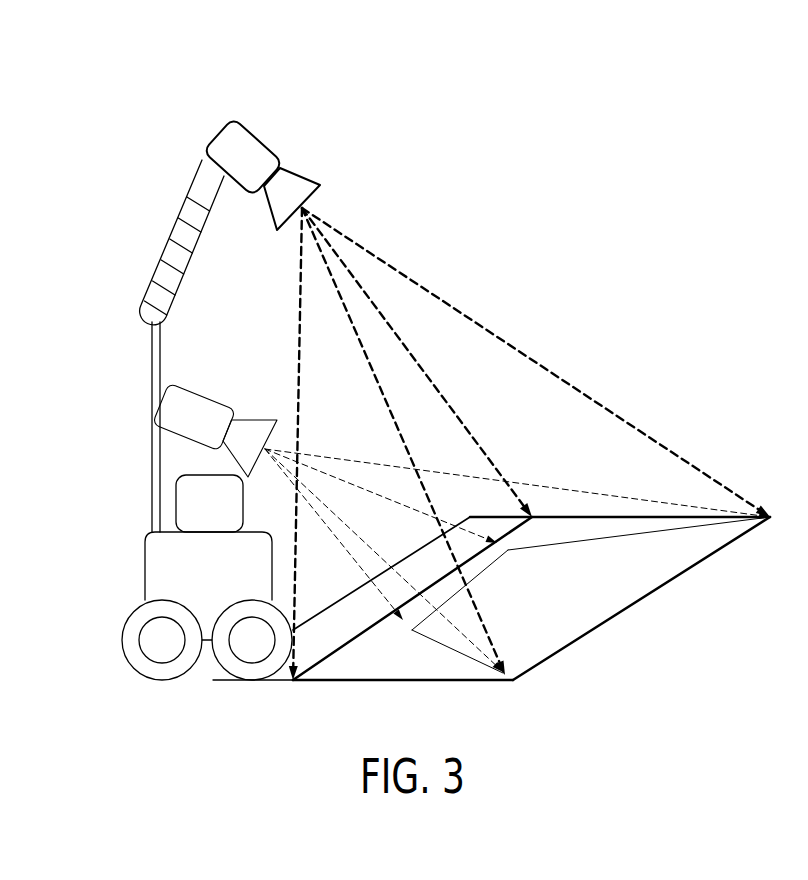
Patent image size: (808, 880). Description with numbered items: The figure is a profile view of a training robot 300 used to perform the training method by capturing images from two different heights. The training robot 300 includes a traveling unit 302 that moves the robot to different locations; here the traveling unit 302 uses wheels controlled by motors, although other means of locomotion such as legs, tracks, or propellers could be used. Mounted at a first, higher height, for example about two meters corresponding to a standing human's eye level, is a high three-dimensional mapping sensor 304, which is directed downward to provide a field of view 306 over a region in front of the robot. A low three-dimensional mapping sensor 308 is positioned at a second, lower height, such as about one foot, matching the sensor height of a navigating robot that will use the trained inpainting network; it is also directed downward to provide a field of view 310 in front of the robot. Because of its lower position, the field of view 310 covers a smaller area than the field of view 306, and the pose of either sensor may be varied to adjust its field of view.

The training robot 300 is at (400, 102).
The traveling unit 302 is at (153, 679).
The high 3D mapping sensor 304 is at (212, 133).
The field of view 306 is at (617, 517).
The low 3D mapping sensor 308 is at (170, 413).
The field of view 310 is at (643, 600).